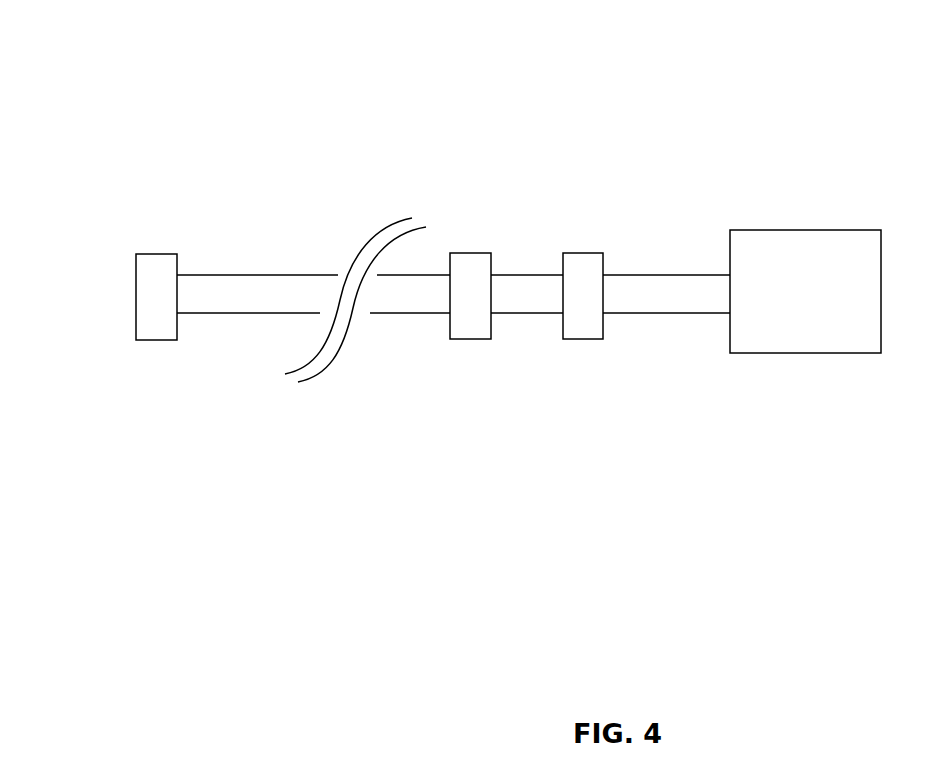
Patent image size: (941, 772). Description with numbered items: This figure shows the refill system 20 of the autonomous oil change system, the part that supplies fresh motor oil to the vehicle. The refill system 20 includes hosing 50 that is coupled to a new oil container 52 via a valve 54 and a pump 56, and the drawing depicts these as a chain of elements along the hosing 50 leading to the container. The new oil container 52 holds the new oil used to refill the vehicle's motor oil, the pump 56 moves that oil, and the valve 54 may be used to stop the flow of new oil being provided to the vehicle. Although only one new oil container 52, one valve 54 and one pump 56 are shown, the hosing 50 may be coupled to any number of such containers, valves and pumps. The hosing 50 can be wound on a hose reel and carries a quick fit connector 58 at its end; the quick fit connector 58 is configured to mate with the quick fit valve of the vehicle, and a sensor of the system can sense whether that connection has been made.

The refill system 20 is at (134, 80).
The hosing 50 is at (240, 275).
The new oil container 52 is at (805, 291).
The valve 54 is at (472, 253).
The pump 56 is at (583, 253).
The quick fit connector 58 is at (157, 254).